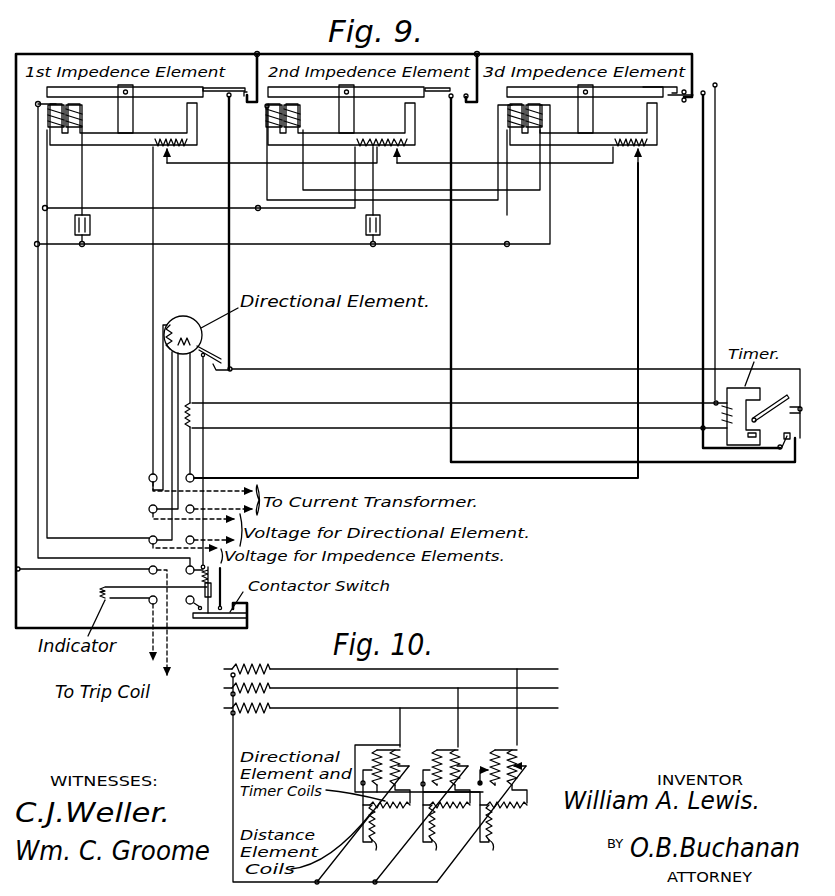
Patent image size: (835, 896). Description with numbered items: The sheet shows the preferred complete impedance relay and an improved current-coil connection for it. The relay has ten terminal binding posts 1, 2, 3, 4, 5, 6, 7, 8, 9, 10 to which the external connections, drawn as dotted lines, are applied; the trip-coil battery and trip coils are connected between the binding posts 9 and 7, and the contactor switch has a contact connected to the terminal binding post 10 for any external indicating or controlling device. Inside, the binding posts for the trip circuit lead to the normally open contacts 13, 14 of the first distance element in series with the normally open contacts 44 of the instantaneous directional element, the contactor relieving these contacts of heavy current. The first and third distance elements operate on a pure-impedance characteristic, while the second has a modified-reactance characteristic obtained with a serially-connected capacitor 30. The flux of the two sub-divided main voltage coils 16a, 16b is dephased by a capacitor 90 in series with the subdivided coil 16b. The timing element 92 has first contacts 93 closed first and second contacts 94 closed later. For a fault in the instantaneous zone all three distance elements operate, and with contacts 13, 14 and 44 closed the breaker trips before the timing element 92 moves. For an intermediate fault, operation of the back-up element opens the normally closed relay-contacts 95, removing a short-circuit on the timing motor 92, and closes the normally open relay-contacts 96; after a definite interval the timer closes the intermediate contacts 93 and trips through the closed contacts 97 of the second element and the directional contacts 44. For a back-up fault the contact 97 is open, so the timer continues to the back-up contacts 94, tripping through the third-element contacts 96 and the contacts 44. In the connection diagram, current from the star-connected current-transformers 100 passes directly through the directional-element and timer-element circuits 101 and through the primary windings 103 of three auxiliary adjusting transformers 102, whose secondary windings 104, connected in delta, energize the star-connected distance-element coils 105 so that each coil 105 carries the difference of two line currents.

In FIG. 9, the terminal binding post 1 is at (256, 315).
In FIG. 9, the terminal binding post 2 is at (421, 317).
In FIG. 9, the terminal binding post 3 is at (184, 508).
In FIG. 9, the terminal binding post 4 is at (219, 502).
In FIG. 9, the terminal binding post 5 is at (328, 343).
In FIG. 9, the terminal binding post 6 is at (210, 533).
In FIG. 9, the terminal binding post 7 is at (358, 354).
In FIG. 9, the terminal binding post 8 is at (285, 338).
In FIG. 9, the terminal binding post 9 is at (133, 628).
In FIG. 9, the terminal binding post 10 is at (188, 606).
In FIG. 9, the normally open contact 13 is at (227, 97).
In FIG. 9, the normally open contact 14 is at (247, 103).
In FIG. 9, the subdivided main voltage coil 16a is at (61, 136).
In FIG. 9, the subdivided main voltage coil 16b is at (80, 127).
In FIG. 9, the serially-connected capacitor 30 is at (383, 226).
In FIG. 9, the normally open contacts of directional element 44 is at (234, 366).
In FIG. 9, the capacitor 90 is at (92, 226).
In FIG. 9, the timing element 92 is at (748, 440).
In FIG. 9, the first contacts of timer 93 is at (777, 414).
In FIG. 9, the second contacts of timer 94 is at (785, 448).
In FIG. 9, the normally closed relay-contacts 95 is at (716, 84).
In FIG. 9, the normally open relay-contacts 96 is at (688, 106).
In FIG. 9, the contacts of second impedance element 97 is at (457, 100).
In FIG. 10, the star-connected current-transformers 100 is at (252, 712).
In FIG. 10, the directional-element and timer-element circuits 101 is at (453, 807).
In FIG. 10, the auxiliary adjusting transformers 102 is at (386, 742).
In FIG. 10, the primary windings 103 is at (452, 757).
In FIG. 10, the secondary windings 104 is at (372, 753).
In FIG. 10, the distance-element coils 105 is at (370, 846).